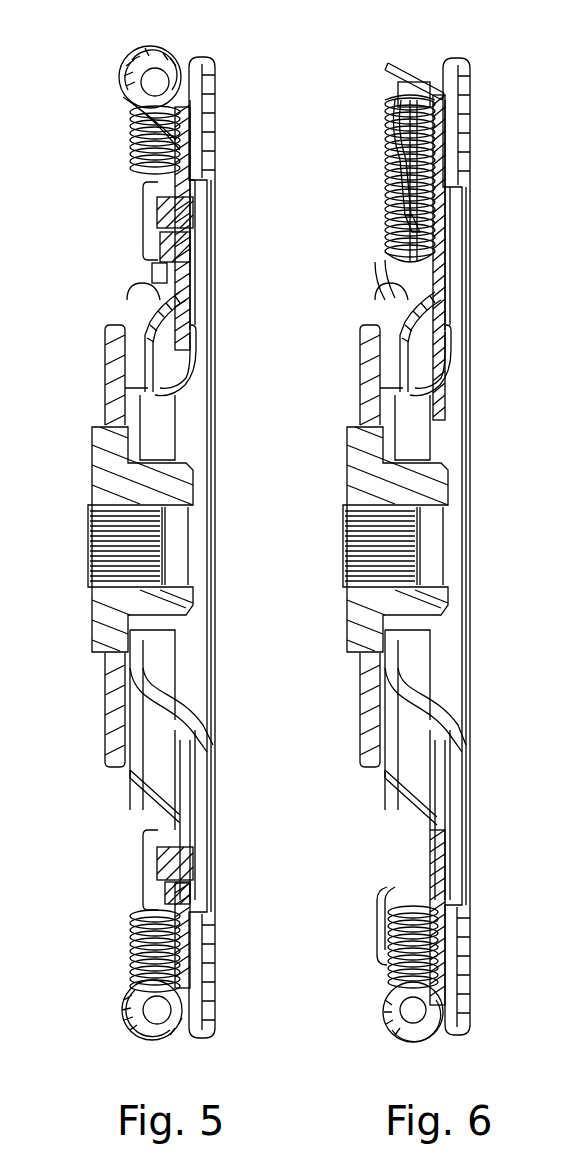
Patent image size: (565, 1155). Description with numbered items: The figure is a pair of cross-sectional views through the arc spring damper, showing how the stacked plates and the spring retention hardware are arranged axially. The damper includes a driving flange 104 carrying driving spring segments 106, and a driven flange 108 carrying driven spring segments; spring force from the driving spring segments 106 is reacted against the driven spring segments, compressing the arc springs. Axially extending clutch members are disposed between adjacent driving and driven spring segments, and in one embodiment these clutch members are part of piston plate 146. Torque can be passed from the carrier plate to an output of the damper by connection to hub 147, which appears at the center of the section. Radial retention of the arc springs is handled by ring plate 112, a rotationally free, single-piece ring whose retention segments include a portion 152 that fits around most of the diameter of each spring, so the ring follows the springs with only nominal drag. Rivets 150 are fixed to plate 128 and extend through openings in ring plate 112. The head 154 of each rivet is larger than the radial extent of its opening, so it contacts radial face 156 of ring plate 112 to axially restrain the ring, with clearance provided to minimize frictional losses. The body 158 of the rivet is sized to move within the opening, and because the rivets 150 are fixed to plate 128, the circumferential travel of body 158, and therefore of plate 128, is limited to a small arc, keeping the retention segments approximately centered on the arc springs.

In FIG. 5, the driving flange 104 is at (201, 156).
In FIG. 6, the driving flange 104 is at (461, 149).
In FIG. 6, the driving spring segments 106 is at (396, 68).
In FIG. 5, the driven flange 108 is at (198, 278).
In FIG. 6, the driven flange 108 is at (454, 302).
In FIG. 5, the ring plate 112 is at (138, 818).
In FIG. 6, the ring plate 112 is at (410, 842).
In FIG. 5, the plate 128 is at (159, 324).
In FIG. 6, the plate 128 is at (376, 305).
In FIG. 5, the piston plate 146 is at (218, 116).
In FIG. 6, the piston plate 146 is at (475, 65).
In FIG. 5, the hub 147 is at (88, 505).
In FIG. 5, the rivets 150 is at (136, 238).
In FIG. 5, the portion of segments 152 is at (120, 1018).
In FIG. 5, the head 154 is at (143, 860).
In FIG. 5, the radial face 156 is at (136, 907).
In FIG. 5, the body 158 is at (172, 221).